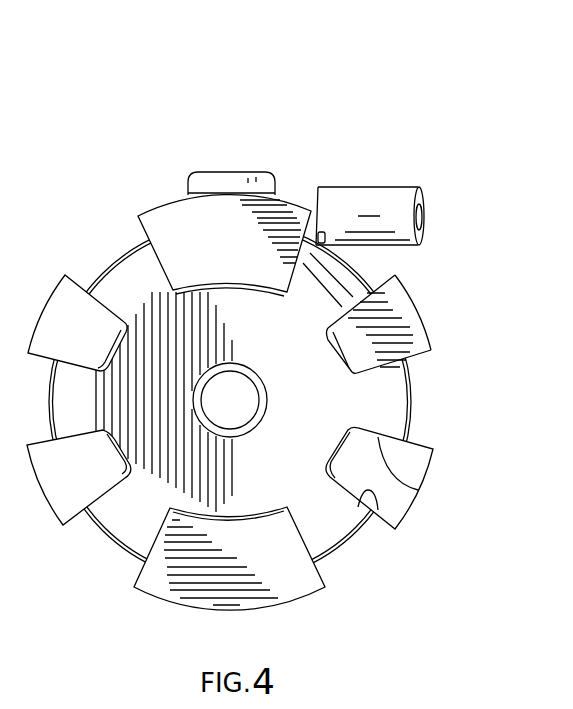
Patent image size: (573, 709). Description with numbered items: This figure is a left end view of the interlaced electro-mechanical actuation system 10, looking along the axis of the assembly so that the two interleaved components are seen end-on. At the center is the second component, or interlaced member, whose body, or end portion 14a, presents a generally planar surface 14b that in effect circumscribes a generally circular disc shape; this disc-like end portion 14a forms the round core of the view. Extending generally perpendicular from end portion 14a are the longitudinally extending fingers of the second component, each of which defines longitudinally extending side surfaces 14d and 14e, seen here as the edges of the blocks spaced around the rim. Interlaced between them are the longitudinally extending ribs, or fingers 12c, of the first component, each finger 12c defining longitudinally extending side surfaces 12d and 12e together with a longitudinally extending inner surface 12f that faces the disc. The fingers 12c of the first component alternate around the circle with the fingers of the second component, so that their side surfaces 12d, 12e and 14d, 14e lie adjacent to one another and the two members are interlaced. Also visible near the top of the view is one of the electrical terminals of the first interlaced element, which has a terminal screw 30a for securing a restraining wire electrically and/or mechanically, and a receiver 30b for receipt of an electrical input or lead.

The interlaced electro-mechanical actuation system 10 is at (355, 119).
The longitudinally extending ribs, or fingers 12c is at (425, 319).
The longitudinally extending side surface 12d is at (398, 272).
The longitudinally extending side surface 12e is at (432, 352).
The longitudinally extending inner surface 12f is at (117, 266).
The body, or end portion 14a is at (413, 405).
The generally planar surface 14b is at (330, 418).
The longitudinally extending side surface 14d is at (378, 510).
The longitudinally extending side surface 14e is at (413, 488).
The terminal screw 30a is at (258, 172).
The receiver 30b is at (398, 185).